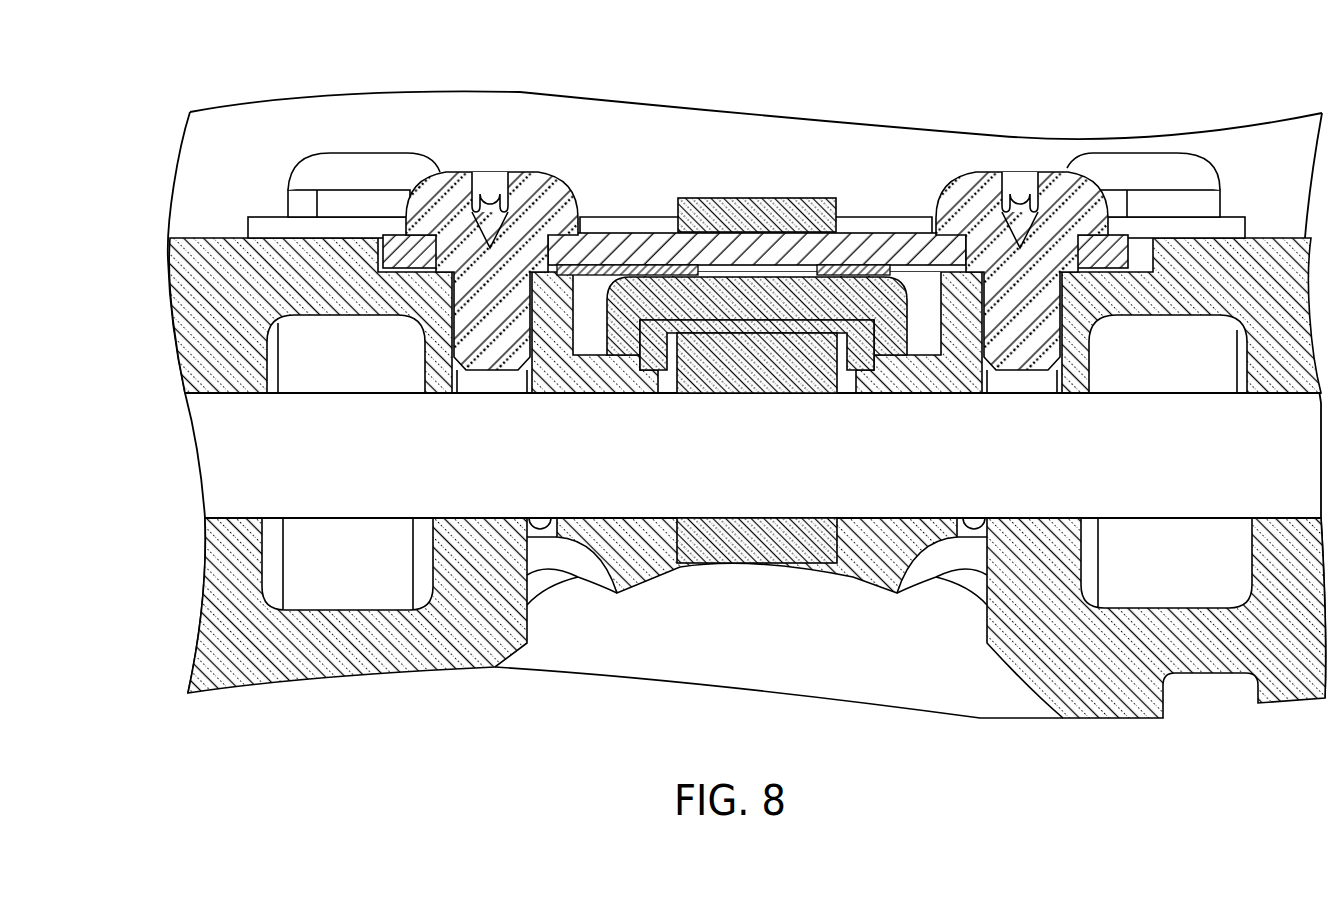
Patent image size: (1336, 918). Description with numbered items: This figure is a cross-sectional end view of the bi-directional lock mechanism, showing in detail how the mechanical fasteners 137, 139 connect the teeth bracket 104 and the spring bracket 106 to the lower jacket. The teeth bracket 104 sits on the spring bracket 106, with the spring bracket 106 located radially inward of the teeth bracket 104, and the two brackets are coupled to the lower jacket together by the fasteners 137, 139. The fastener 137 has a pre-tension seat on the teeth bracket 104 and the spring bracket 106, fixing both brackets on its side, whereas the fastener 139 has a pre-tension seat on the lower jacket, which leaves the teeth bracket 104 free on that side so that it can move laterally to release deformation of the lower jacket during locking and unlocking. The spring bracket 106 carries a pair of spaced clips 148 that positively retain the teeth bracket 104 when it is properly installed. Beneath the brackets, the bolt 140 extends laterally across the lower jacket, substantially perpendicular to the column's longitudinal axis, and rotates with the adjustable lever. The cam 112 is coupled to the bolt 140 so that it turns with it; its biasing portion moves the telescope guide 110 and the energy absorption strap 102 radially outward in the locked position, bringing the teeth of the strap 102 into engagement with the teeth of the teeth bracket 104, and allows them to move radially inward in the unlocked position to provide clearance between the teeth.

The energy absorption strap 102 is at (622, 308).
The teeth bracket 104 is at (870, 247).
The spring bracket 106 is at (617, 265).
The telescope guide 110 is at (667, 346).
The cam 112 is at (713, 547).
The mechanical fastener 137 is at (540, 202).
The mechanical fastener 139 is at (965, 200).
The bolt 140 is at (250, 450).
The clips 148 is at (775, 198).